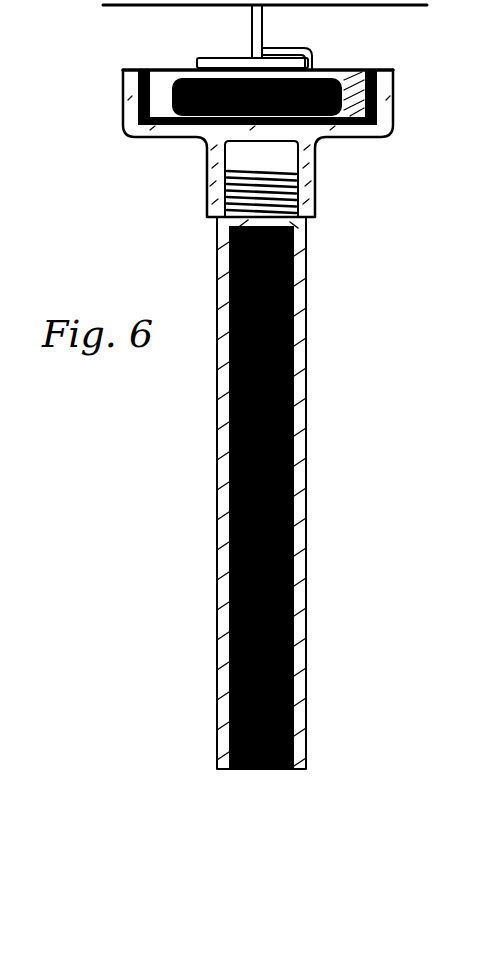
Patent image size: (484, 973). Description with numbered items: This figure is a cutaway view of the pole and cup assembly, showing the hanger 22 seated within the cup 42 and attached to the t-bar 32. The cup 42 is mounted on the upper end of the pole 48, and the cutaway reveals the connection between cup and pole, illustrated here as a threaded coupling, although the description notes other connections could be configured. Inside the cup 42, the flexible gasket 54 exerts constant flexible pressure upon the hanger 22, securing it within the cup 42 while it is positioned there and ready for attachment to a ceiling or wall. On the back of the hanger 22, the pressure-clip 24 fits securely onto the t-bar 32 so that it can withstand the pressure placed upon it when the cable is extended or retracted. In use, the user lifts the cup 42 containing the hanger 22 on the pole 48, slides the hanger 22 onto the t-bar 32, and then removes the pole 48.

The hanger 22 is at (192, 70).
The pressure-clip 24 is at (318, 48).
The t-bar 32 is at (252, 30).
The cup 42 is at (122, 112).
The pole 48 is at (217, 300).
The flexible gasket 54 is at (142, 71).